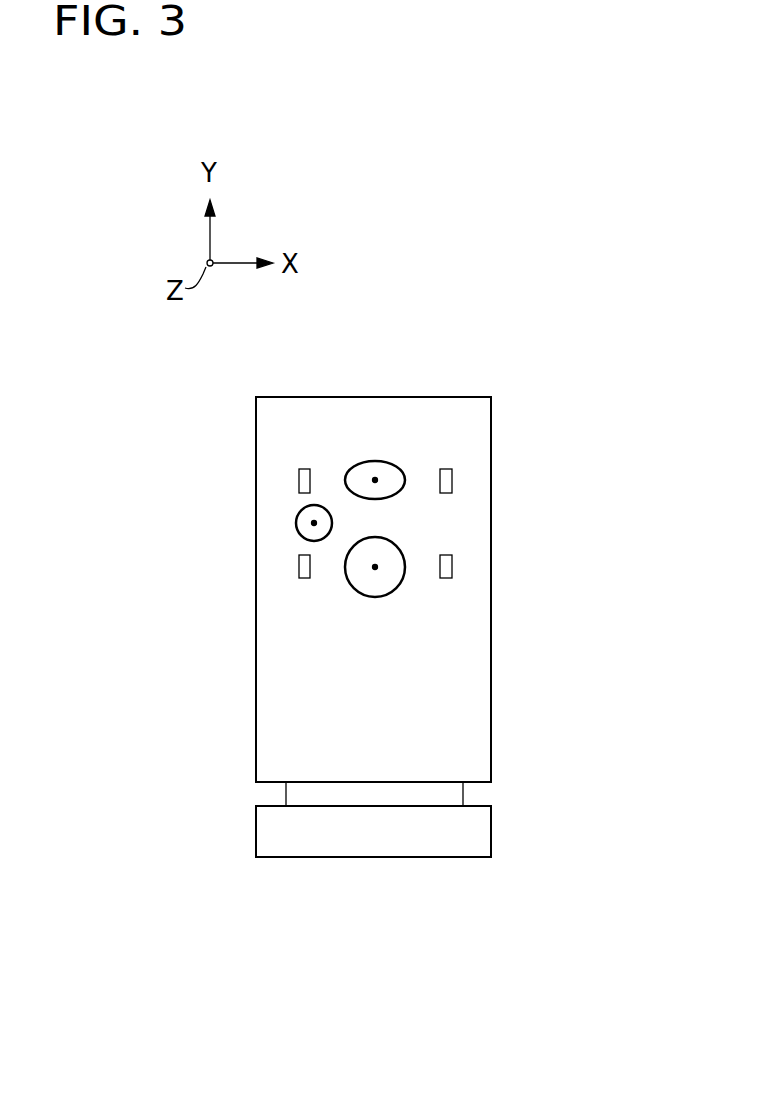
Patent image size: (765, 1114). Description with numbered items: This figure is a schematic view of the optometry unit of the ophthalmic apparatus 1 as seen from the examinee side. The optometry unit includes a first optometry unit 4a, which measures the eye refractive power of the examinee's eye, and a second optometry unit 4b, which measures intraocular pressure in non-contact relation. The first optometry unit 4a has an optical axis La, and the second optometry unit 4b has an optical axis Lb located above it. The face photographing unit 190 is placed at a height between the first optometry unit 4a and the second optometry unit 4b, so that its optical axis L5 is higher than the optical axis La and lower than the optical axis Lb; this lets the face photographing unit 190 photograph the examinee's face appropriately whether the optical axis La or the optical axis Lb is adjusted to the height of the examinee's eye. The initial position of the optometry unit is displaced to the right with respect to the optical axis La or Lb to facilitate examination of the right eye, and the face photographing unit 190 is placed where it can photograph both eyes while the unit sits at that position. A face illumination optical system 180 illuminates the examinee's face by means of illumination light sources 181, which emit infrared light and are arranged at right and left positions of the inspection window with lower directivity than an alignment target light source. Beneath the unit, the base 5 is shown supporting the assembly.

The ophthalmic apparatus 1 is at (519, 270).
The first optometry unit 4a is at (345, 609).
The second optometry unit 4b is at (410, 448).
The base / stand 5 is at (372, 837).
The face illumination optical system 180 is at (497, 481).
The illumination light sources 181 is at (303, 468).
The face photographing unit 190 is at (278, 534).
The optical axis La is at (377, 569).
The optical axis Lb is at (375, 478).
The optical axis L5 is at (314, 523).